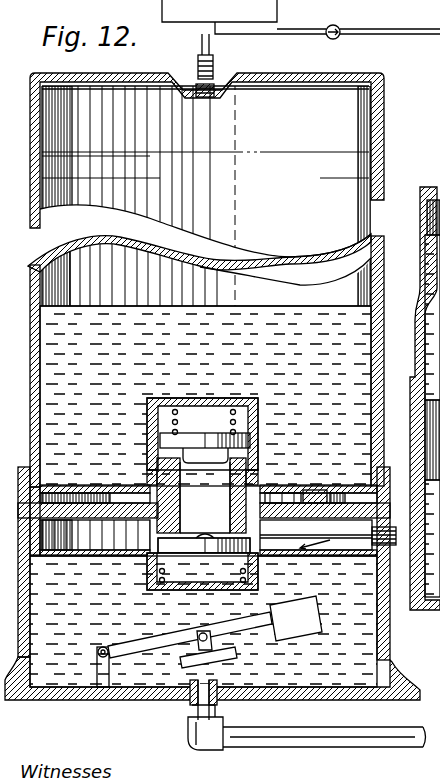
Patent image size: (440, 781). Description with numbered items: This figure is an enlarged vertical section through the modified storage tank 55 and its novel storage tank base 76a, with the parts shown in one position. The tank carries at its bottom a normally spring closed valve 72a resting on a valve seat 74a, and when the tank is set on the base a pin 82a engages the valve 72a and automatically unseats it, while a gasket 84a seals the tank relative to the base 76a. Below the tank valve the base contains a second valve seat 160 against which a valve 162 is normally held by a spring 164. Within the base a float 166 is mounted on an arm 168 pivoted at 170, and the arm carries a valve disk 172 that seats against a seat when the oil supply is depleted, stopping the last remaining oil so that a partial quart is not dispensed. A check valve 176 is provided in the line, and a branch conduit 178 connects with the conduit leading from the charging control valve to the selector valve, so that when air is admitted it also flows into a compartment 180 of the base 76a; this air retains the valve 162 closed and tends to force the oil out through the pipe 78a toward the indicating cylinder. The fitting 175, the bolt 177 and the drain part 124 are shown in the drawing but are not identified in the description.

The storage tank 55 is at (383, 132).
The valve 72a is at (250, 440).
The valve seat 74a is at (250, 465).
The storage tank base 76a is at (386, 650).
The oil passageway 78a is at (272, 34).
The pin 82a is at (218, 460).
The gasket 84a is at (312, 492).
The drain fitting 124 is at (215, 688).
The valve seat 160 is at (226, 536).
The valve 162 is at (204, 544).
The spring 164 is at (165, 572).
The float 166 is at (296, 618).
The arm 168 is at (190, 635).
The pivot 170 is at (107, 650).
The valve disk 172 is at (236, 655).
The nut 175 is at (200, 98).
The check valve 176 is at (340, 28).
The bolt 177 is at (213, 62).
The branch conduit 178 is at (392, 528).
The compartment 180 is at (316, 535).